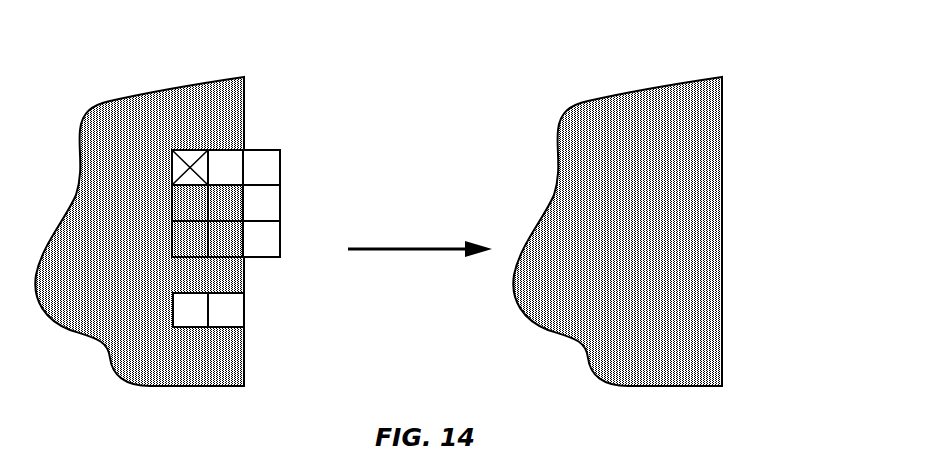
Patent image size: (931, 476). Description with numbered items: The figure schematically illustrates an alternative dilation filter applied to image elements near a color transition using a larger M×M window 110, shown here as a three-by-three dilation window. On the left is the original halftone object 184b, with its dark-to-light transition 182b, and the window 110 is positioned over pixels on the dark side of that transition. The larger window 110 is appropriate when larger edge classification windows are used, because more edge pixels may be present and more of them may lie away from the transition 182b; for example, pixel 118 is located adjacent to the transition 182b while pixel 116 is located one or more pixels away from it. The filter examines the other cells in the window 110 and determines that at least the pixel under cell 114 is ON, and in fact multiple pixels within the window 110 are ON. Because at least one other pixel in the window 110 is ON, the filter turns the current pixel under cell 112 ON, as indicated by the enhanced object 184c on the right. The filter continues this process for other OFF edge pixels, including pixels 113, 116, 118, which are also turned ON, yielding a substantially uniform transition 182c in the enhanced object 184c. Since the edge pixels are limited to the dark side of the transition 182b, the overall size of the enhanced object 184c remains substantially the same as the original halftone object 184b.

The M×M window 110 is at (271, 192).
The cell 112 is at (208, 162).
The pixel 113 is at (235, 148).
The cell 114 is at (237, 258).
The pixel 116 is at (172, 306).
The pixel 118 is at (227, 328).
The dark-to-light transition 182b is at (244, 98).
The transition 182c is at (722, 100).
The original halftone object 184b is at (207, 82).
The enhanced object 184c is at (683, 80).